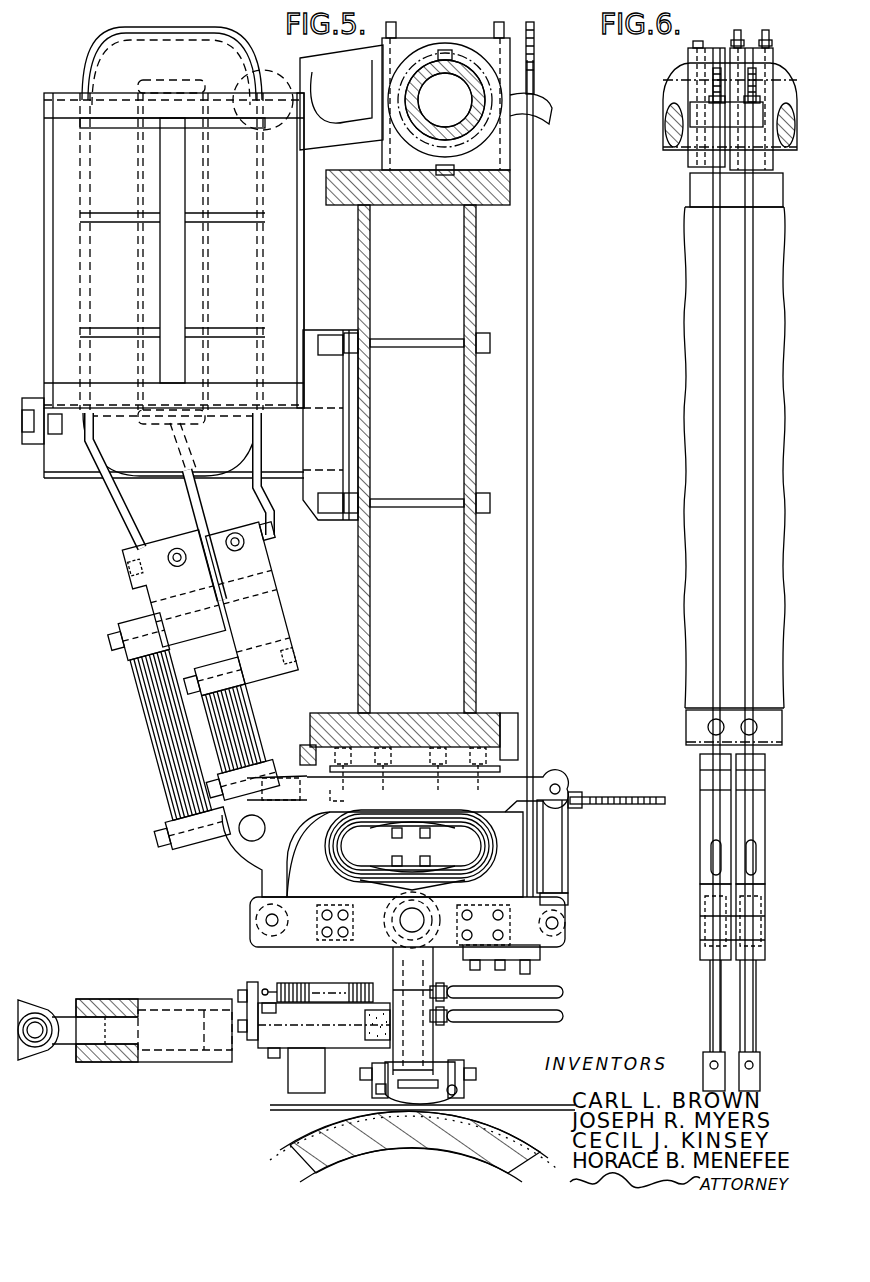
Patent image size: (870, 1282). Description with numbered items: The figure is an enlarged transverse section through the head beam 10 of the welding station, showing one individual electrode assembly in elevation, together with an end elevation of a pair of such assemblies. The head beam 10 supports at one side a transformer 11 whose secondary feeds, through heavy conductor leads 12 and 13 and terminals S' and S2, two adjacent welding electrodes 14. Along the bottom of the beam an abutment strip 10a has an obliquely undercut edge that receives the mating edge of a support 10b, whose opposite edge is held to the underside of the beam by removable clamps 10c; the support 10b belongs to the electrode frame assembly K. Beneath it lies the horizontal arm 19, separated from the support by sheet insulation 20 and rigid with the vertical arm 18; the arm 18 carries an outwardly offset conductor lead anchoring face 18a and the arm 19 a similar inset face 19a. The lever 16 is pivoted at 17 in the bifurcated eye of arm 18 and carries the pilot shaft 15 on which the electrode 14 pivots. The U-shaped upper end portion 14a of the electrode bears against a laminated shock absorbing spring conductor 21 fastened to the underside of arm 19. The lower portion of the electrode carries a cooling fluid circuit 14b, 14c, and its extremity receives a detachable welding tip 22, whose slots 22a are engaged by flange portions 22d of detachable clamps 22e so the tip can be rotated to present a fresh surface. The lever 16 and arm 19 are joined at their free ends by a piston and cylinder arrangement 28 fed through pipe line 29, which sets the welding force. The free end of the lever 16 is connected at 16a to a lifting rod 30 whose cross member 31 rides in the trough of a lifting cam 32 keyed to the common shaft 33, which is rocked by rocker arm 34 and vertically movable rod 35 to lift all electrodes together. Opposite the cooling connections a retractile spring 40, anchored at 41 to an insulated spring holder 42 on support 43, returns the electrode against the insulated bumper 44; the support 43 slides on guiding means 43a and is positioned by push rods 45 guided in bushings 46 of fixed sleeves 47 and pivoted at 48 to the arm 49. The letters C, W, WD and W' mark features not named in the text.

In FIG. 5, the head beam 10 is at (462, 582).
In FIG. 6, the head beam 10 is at (690, 598).
In FIG. 5, the abutment strip 10a is at (300, 752).
In FIG. 5, the support 10b is at (410, 745).
In FIG. 5, the removable clamps 10c is at (509, 735).
In FIG. 6, the removable clamps 10c is at (692, 718).
In FIG. 5, the transformers 11 is at (68, 92).
In FIG. 5, the conductor lead 12 is at (153, 748).
In FIG. 5, the conductor lead 13 is at (245, 740).
In FIG. 5, the welding electrode 14 is at (413, 1011).
In FIG. 6, the welding electrode 14 is at (710, 980).
In FIG. 5, the upper end portion of electrode 14a is at (308, 854).
In FIG. 5, the cooling fluid circuit 14b is at (618, 992).
In FIG. 5, the cooling fluid circuit 14c is at (622, 1020).
In FIG. 5, the pilot shaft 15 is at (398, 920).
In FIG. 5, the lever 16 is at (356, 948).
In FIG. 5, the lever free end connection 16a is at (545, 962).
In FIG. 6, the lever free end connection 16a is at (756, 928).
In FIG. 5, the pivotal connection 17 is at (265, 920).
In FIG. 5, the vertical arm 18 is at (258, 873).
In FIG. 5, the conductor lead anchoring face 18a is at (266, 835).
In FIG. 5, the horizontal arm 19 is at (437, 791).
In FIG. 5, the conductor lead anchoring face 19a is at (280, 790).
In FIG. 5, the sheet insulation 20 is at (348, 785).
In FIG. 5, the laminated spring conductor 21 is at (497, 845).
In FIG. 5, the welding tip 22 is at (420, 1084).
In FIG. 6, the welding tip 22 is at (703, 1080).
In FIG. 5, the slot 22a is at (376, 1090).
In FIG. 5, the flange portions 22d is at (462, 1090).
In FIG. 5, the detachable clamps 22e is at (458, 1054).
In FIG. 5, the piston and cylinder arrangement 28 is at (568, 856).
In FIG. 6, the piston and cylinder arrangement 28 is at (700, 832).
In FIG. 5, the pipe line 29 is at (602, 797).
In FIG. 5, the lifting rod 30 is at (527, 264).
In FIG. 6, the lifting rod 30 is at (745, 452).
In FIG. 5, the cross member 31 is at (540, 96).
In FIG. 5, the lifting cam 32 is at (470, 60).
In FIG. 6, the lifting cam 32 is at (700, 118).
In FIG. 5, the shaft 33 is at (426, 76).
In FIG. 6, the shaft 33 is at (674, 92).
In FIG. 5, the rocker arm 34 is at (365, 62).
In FIG. 5, the vertically movable rod 35 is at (300, 266).
In FIG. 5, the retractile spring 40 is at (316, 982).
In FIG. 5, the anchor 41 is at (265, 988).
In FIG. 5, the insulated spring holder 42 is at (250, 982).
In FIG. 5, the support 43 is at (324, 1030).
In FIG. 5, the guiding means 43a is at (288, 1082).
In FIG. 5, the insulated stop or bumper 44 is at (365, 1028).
In FIG. 5, the push rod 45 is at (122, 1025).
In FIG. 5, the bushing 46 is at (92, 1004).
In FIG. 5, the fixed guide or sleeve 47 is at (128, 1058).
In FIG. 5, the pivotal connection 48 is at (36, 1036).
In FIG. 5, the arm 49 is at (28, 1004).
In FIG. 5, the bracket C is at (330, 459).
In FIG. 5, the electrode frame assembly K is at (405, 854).
In FIG. 5, the terminal S' is at (154, 590).
In FIG. 5, the terminal S2 is at (270, 620).
In FIG. 5, the work W is at (422, 1119).
In FIG. 5, the weld WD is at (374, 1145).
In FIG. 5, the work point W' is at (420, 1145).